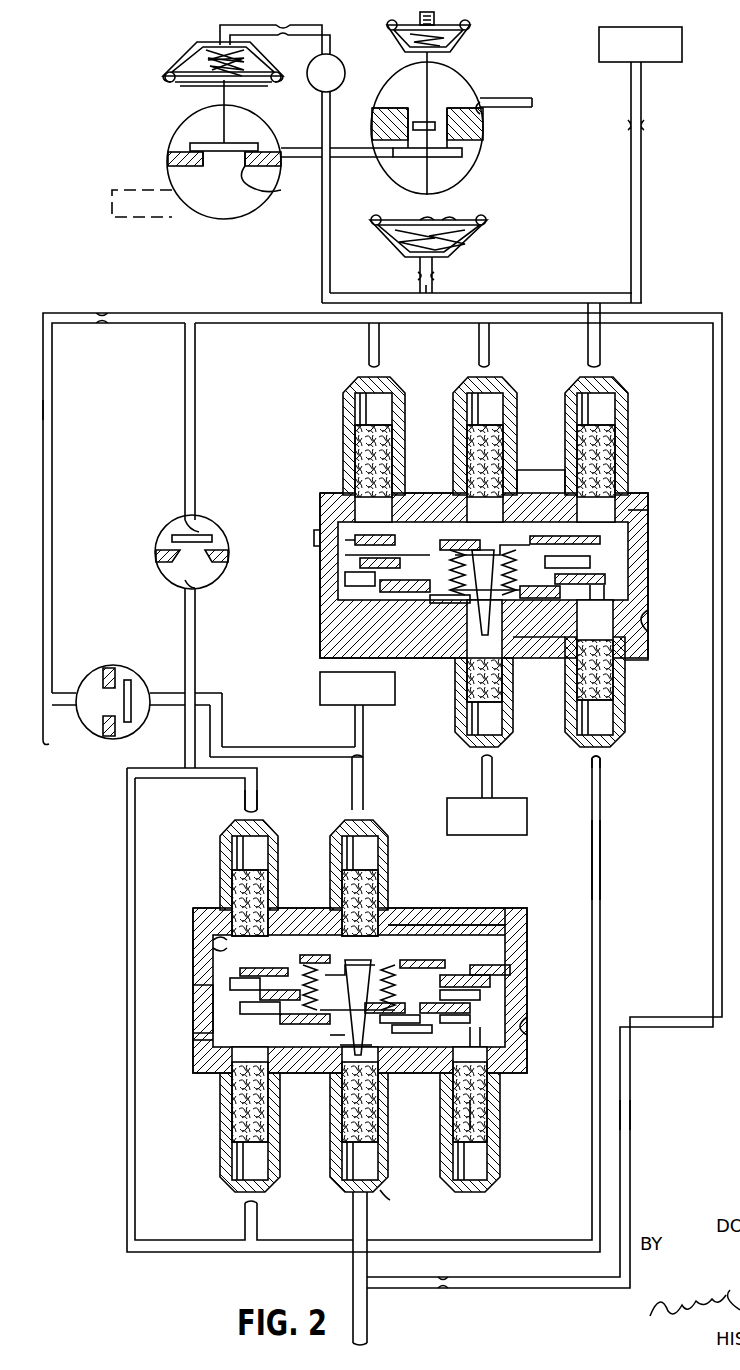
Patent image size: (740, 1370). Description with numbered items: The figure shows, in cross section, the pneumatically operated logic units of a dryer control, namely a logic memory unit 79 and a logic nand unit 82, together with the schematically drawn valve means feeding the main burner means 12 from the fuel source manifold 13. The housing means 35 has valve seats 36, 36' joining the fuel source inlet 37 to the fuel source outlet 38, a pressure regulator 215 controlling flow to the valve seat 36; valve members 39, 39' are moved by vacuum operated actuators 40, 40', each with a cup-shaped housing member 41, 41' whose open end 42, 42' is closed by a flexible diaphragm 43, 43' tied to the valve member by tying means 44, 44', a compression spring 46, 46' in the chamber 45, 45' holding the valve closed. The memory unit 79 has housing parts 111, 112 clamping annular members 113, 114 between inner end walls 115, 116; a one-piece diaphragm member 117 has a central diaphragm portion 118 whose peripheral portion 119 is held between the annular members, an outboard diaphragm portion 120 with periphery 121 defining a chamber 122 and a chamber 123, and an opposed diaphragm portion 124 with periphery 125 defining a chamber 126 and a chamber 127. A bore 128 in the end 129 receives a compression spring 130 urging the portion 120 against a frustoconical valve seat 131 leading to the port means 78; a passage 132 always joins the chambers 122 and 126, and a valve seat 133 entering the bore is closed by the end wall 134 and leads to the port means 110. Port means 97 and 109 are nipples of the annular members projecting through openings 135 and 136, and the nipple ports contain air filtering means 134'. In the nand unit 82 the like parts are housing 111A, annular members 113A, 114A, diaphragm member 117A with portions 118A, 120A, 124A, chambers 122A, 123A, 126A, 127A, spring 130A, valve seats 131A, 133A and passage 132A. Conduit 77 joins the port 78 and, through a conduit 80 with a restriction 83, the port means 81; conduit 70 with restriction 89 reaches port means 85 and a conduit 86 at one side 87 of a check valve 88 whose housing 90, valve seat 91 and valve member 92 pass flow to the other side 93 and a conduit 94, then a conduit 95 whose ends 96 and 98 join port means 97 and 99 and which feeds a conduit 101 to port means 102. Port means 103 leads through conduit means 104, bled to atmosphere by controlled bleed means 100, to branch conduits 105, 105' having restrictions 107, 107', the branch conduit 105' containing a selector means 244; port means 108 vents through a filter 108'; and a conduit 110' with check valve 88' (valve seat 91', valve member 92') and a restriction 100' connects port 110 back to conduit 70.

The main burner means 12 is at (142, 218).
The fuel source manifold 13 is at (516, 98).
The housing means 35 is at (464, 84).
The valve seat 36 is at (468, 136).
The fuel source inlet 37 is at (480, 122).
The fuel source outlet 38 is at (180, 188).
The valve member 39 is at (399, 168).
The vacuum operated actuator 40 is at (465, 210).
The cup-shaped housing member 41 is at (445, 247).
The open end 42 is at (476, 208).
The flexible diaphragm 43 is at (418, 206).
The tying means 44 is at (465, 125).
The chamber 45 is at (485, 237).
The compression spring 46 is at (388, 246).
The conduit 70 is at (52, 412).
The conduit 77 is at (353, 1276).
The port means 78 is at (387, 1190).
The logic memory unit 79 is at (512, 870).
The conduit 80 is at (630, 1114).
The port means 81 is at (496, 388).
The logic nand unit 82 is at (325, 471).
The restriction 83 is at (449, 1296).
The port means 85 is at (343, 398).
The conduit 86 is at (185, 438).
The one side 87 is at (186, 514).
The check valve 88 is at (144, 501).
The restriction means 89 is at (106, 305).
The housing means 90 is at (160, 574).
The valve seat 91 is at (162, 546).
The valve member 92 is at (157, 525).
The other side 93 is at (185, 588).
The conduit 94 is at (185, 638).
The conduit 95 is at (127, 938).
The one end 96 is at (257, 786).
The port means 97 is at (220, 836).
The other end 98 is at (245, 1216).
The port means 99 is at (220, 1163).
The controlled bleed means 100 is at (660, 165).
The conduit 101 is at (600, 866).
The port means 102 is at (624, 728).
The port means 103 is at (622, 420).
The conduit means 104 is at (565, 298).
The branch conduit means 105 is at (462, 277).
The restriction 107 is at (392, 274).
The port means 108 is at (457, 677).
The port means 109 is at (500, 1174).
The port means 110 is at (329, 845).
The housing part 111 is at (212, 1072).
The housing part 112 is at (482, 908).
The annular member 113 is at (500, 1022).
The annular member 114 is at (495, 978).
The inner end wall means 115 is at (232, 1009).
The inner end wall means 116 is at (496, 968).
The diaphragm member 117 is at (490, 1000).
The central diaphragm portion 118 is at (260, 978).
The outer peripheral portion 119 is at (242, 994).
The outboard diaphragm portion 120 is at (335, 1056).
The outer periphery 121 is at (242, 1040).
The chamber 122 is at (414, 1028).
The chamber 123 is at (480, 1023).
The outboard diaphragm portion 124 is at (400, 958).
The outer periphery 125 is at (422, 960).
The chamber 126 is at (400, 968).
The chamber 127 is at (256, 970).
The bore 128 is at (320, 968).
The end 129 is at (316, 958).
The compression spring 130 is at (390, 950).
The frustoconical valve seat 131 is at (384, 1030).
The passage means 132 is at (388, 1022).
The frustoconical valve seat 133 is at (348, 1064).
The end wall 134 is at (315, 1092).
The opening means 135 is at (210, 936).
The opening means 136 is at (484, 1042).
The pressure regulator 215 is at (463, 46).
The selector means 244 is at (343, 78).
The vacuum operated actuator 40' is at (184, 52).
The cup-shaped housing member 41' is at (214, 44).
The open end 42' is at (183, 88).
The flexible diaphragm 43' is at (203, 104).
The tying means 44' is at (255, 111).
The chamber 45' is at (164, 61).
The compression spring 46' is at (245, 61).
The valve member 39' is at (186, 139).
The valve seat 36' is at (317, 178).
The one-way check valve 88' is at (137, 722).
The valve seat 91' is at (87, 661).
The valve member 92' is at (140, 718).
The restriction 100' is at (350, 714).
The branch conduit means 105' is at (295, 197).
The restriction 107' is at (293, 31).
The filter 108' is at (499, 795).
The conduit 110' is at (286, 732).
The air filtering means 134' is at (515, 1118).
The housing part 111A is at (646, 508).
The annular member 113A is at (360, 554).
The annular member 114A is at (614, 598).
The diaphragm member 117A is at (366, 588).
The central diaphragm portion 118A is at (370, 578).
The outboard diaphragm portion 120A is at (355, 522).
The chamber 122A is at (564, 524).
The chamber 123A is at (600, 553).
The outboard diaphragm portion 124A is at (491, 626).
The chamber 126A is at (454, 598).
The chamber 127A is at (594, 585).
The compression spring 130A is at (460, 596).
The frustoconical valve seat 131A is at (462, 544).
The passage means 132A is at (444, 546).
The frustoconical valve seat 133A is at (516, 543).